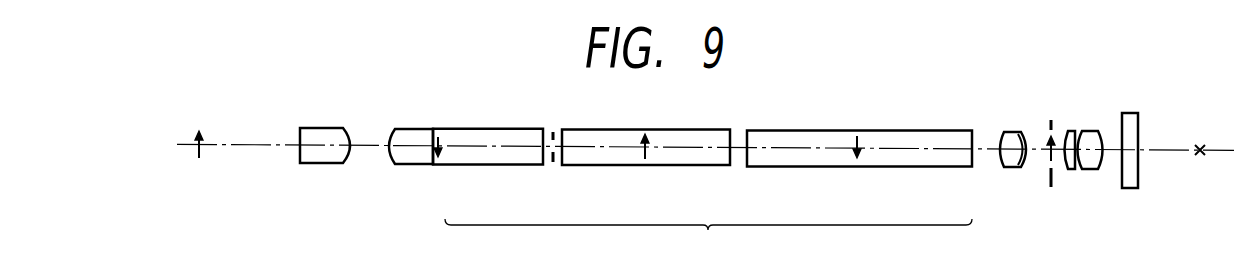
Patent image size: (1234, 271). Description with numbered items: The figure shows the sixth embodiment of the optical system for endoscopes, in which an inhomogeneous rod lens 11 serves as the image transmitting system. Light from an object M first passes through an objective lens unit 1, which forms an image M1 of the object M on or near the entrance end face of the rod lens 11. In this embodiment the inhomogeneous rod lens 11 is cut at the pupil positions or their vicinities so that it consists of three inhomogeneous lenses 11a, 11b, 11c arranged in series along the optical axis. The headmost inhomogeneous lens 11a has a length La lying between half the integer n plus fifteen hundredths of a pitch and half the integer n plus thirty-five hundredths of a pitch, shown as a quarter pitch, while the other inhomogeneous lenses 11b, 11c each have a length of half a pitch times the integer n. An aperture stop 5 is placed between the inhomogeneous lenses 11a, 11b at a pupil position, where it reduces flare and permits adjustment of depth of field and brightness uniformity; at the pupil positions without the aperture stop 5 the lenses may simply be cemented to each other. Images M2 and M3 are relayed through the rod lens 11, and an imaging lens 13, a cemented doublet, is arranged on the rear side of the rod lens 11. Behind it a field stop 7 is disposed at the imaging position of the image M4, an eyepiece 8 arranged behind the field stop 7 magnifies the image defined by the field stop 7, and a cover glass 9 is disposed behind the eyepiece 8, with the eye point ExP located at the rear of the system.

The objective lens unit 1 is at (300, 180).
The aperture stop 5 is at (553, 131).
The field stop 7 is at (1052, 124).
The eyepiece 8 is at (1088, 131).
The cover glass 9 is at (1130, 113).
The inhomogeneous rod lens 11 is at (708, 242).
The headmost inhomogeneous lens 11a is at (545, 179).
The inhomogeneous lens 11b is at (730, 179).
The inhomogeneous lens 11c is at (972, 180).
The imaging lens 13 is at (1008, 132).
The object M is at (199, 129).
The image of the object M1 is at (437, 127).
The object image M2 is at (647, 130).
The image M3 is at (858, 129).
The fourth intermediate image M4 is at (1053, 170).
The eye point ExP is at (1204, 135).